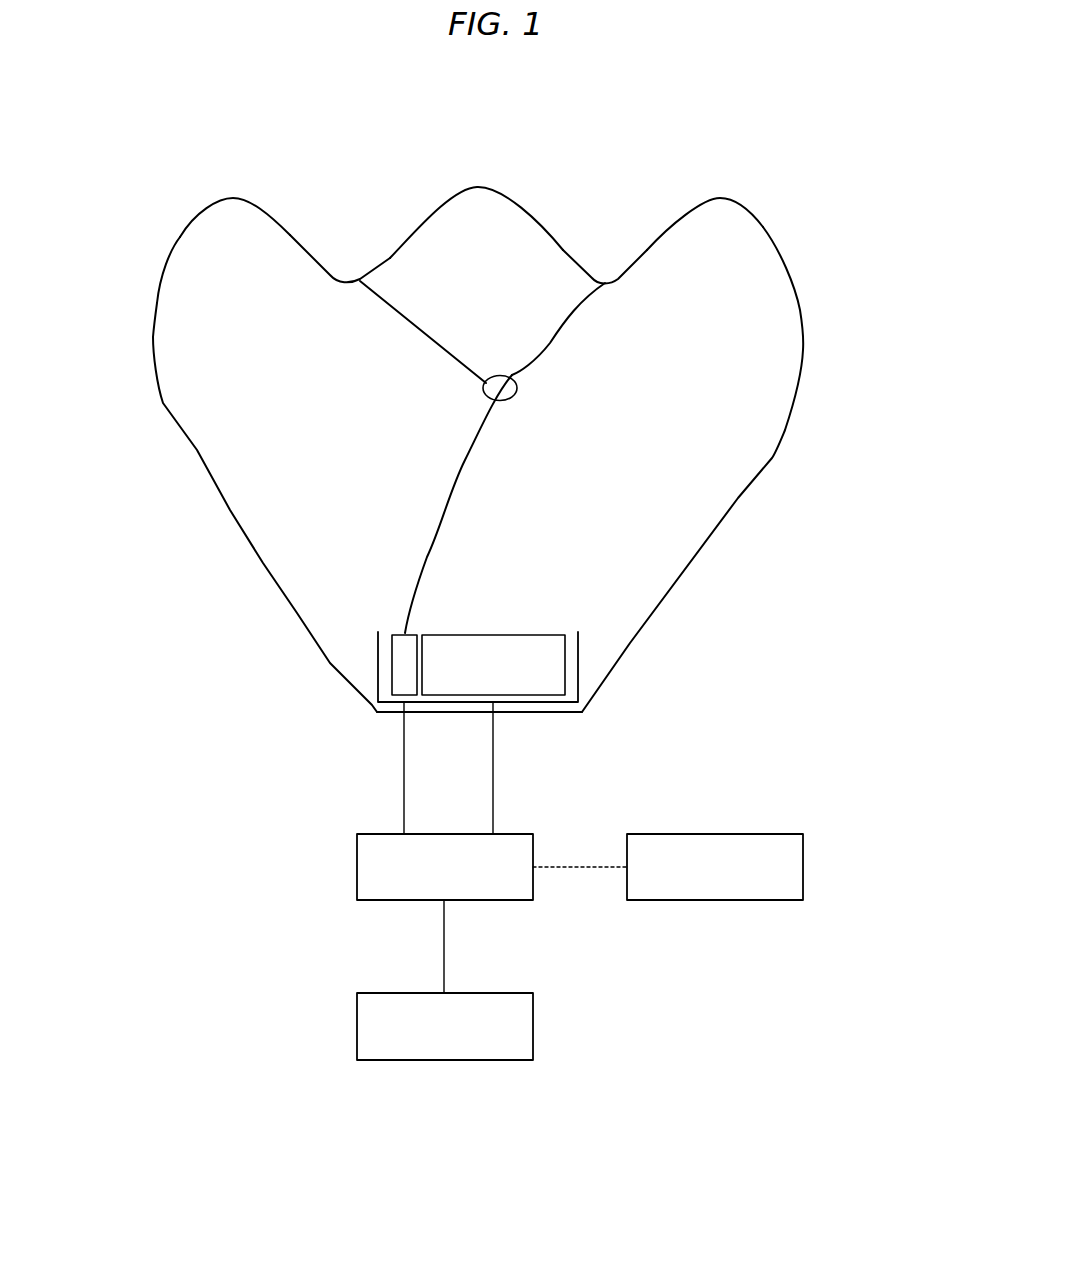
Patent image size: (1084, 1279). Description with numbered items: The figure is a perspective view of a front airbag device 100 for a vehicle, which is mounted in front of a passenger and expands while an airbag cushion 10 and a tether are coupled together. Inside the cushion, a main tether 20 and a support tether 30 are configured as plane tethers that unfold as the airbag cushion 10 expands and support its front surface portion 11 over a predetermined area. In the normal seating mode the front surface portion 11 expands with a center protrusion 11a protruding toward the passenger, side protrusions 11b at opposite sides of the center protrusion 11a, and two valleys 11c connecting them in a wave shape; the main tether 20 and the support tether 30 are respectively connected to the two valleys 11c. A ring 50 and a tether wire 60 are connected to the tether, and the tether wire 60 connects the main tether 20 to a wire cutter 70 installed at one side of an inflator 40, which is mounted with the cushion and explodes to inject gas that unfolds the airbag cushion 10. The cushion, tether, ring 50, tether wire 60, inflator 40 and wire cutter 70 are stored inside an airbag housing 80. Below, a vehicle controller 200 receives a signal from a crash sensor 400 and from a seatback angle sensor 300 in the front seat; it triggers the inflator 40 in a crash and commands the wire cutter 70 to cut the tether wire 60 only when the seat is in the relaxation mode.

The front airbag device 100 is at (777, 458).
The airbag cushion 10 is at (163, 407).
The front surface portion 11 is at (670, 908).
The center protrusion 11a is at (478, 187).
The side protrusions 11b is at (233, 197).
The valleys 11c is at (343, 280).
The main tether 20 is at (558, 325).
The support tether 30 is at (410, 322).
The inflator 40 is at (547, 682).
The ring 50 is at (517, 387).
The tether wire 60 is at (427, 542).
The wire cutter 70 is at (397, 673).
The airbag housing 80 is at (578, 641).
The vehicle controller 200 is at (445, 867).
The seatback angle sensor 300 is at (715, 867).
The crash sensor 400 is at (445, 1026).